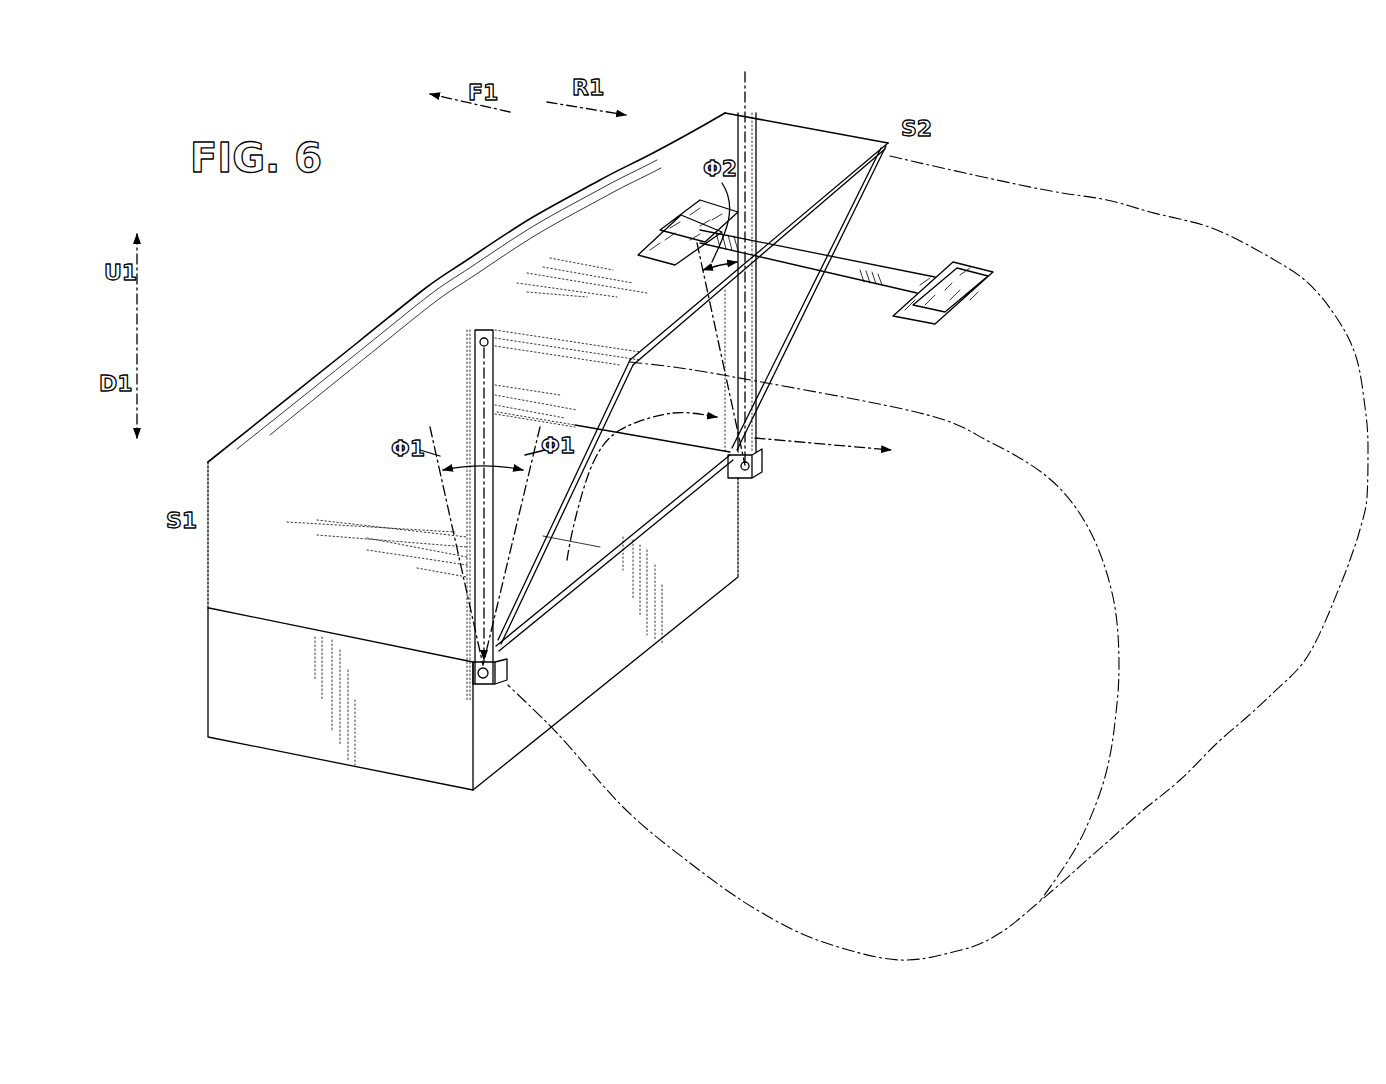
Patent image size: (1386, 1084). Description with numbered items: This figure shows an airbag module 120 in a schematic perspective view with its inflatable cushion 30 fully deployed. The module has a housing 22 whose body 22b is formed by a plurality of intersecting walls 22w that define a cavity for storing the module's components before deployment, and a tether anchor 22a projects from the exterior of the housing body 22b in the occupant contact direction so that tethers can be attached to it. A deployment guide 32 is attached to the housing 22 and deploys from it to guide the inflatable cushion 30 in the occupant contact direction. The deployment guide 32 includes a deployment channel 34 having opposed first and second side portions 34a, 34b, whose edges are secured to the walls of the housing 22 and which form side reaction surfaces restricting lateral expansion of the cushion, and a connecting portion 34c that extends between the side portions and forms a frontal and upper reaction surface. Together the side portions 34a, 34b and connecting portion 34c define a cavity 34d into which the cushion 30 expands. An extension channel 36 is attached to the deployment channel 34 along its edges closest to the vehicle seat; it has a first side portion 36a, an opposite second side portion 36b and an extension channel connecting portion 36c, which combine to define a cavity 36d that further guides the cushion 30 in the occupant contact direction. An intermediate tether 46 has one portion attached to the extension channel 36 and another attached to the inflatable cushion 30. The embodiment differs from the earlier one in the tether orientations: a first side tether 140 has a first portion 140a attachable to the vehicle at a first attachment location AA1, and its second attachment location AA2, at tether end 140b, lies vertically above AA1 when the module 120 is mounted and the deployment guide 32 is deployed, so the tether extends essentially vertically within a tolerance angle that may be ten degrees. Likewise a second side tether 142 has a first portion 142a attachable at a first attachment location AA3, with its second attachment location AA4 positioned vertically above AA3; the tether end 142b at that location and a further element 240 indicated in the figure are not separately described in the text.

The housing 22 is at (508, 642).
The tether anchor 22a is at (758, 469).
The housing body 22b is at (311, 709).
The intersecting walls 22w is at (492, 755).
The inflatable cushion 30 is at (1102, 212).
The deployment guide 32 is at (511, 360).
The deployment channel 34 is at (511, 360).
The deployment channel first side portion 34a is at (267, 542).
The deployment channel second side portion 34b is at (705, 360).
The deployment channel connecting portion 34c is at (407, 333).
The deployment channel cavity 34d is at (320, 447).
The extension channel 36 is at (745, 381).
The extension channel first side portion 36a is at (523, 549).
The extension channel second side portion 36b is at (787, 303).
The extension channel connecting portion 36c is at (845, 163).
The extension channel cavity 36d is at (652, 475).
The intermediate tether 46 is at (812, 259).
The airbag module 120 is at (1367, 160).
The first side tether 140 is at (472, 463).
The first side tether first portion 140a is at (470, 649).
The tether end 140b is at (490, 358).
The second side tether 142 is at (804, 279).
The second side tether first portion 142a is at (748, 440).
The second post upper end 142b is at (738, 148).
The mounting structure 240 is at (316, 854).
The first attachment location of first side tether AA1 is at (470, 690).
The second attachment location of first side tether AA2 is at (484, 331).
The first attachment location of second side tether AA3 is at (768, 470).
The second attachment location of second side tether AA4 is at (752, 105).